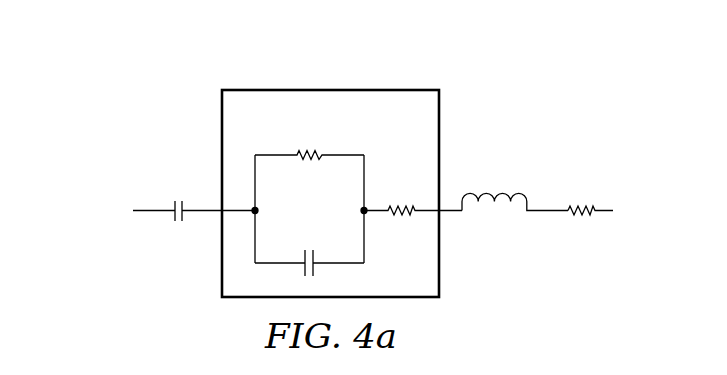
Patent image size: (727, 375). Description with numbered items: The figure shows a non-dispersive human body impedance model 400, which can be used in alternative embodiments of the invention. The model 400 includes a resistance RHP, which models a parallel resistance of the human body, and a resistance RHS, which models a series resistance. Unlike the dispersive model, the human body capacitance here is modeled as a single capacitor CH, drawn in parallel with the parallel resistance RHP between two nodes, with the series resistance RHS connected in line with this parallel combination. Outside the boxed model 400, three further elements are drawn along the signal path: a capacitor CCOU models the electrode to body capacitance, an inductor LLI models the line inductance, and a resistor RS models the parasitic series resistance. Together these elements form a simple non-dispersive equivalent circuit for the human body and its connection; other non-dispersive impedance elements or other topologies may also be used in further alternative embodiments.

The non-dispersive human body impedance model 400 is at (342, 160).
The electrode to body capacitance CCOU is at (177, 193).
The parallel resistance RHP is at (309, 139).
The human body capacitance CH is at (309, 247).
The series resistance RHS is at (413, 194).
The line inductance LLI is at (515, 186).
The parasitic series resistance RS is at (590, 193).